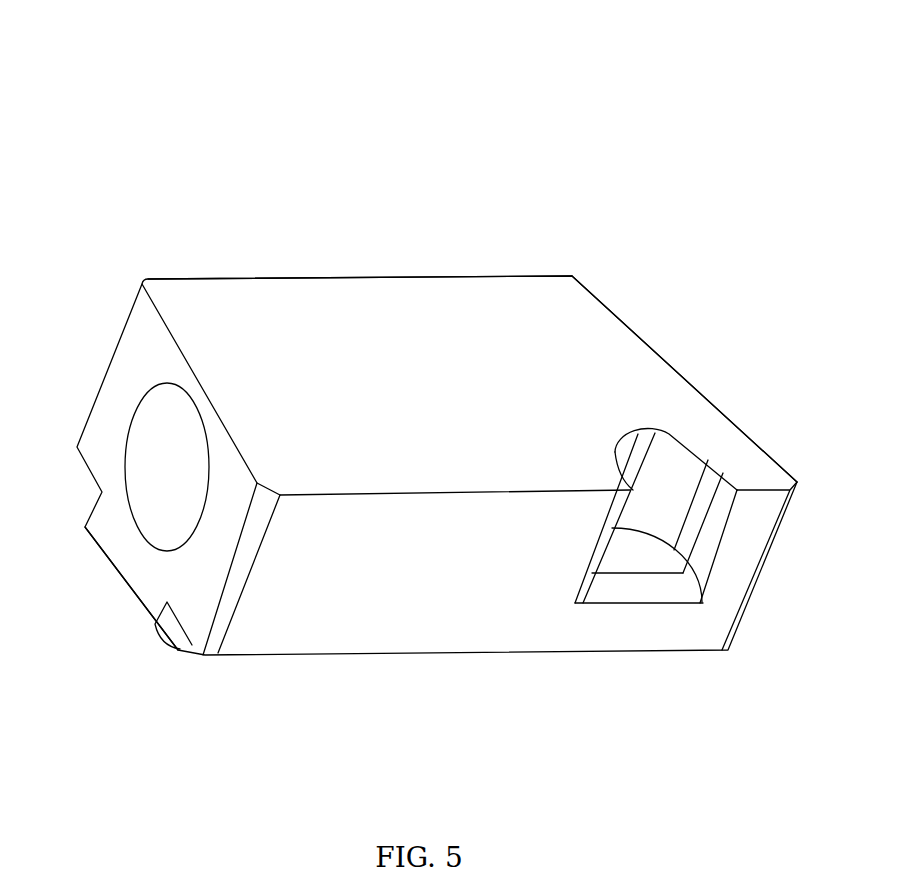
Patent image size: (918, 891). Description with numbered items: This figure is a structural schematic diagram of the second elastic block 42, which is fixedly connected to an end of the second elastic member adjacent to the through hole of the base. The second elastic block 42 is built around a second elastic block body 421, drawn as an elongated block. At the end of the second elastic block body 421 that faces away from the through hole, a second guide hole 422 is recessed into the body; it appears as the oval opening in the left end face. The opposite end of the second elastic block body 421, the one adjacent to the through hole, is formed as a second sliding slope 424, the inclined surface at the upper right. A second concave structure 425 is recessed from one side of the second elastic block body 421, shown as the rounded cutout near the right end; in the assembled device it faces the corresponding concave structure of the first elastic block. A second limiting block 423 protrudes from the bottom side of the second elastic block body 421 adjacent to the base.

The second elastic block 42 is at (410, 37).
The second elastic block body 421 is at (372, 298).
The second guide hole 422 is at (157, 420).
The second limiting block 423 is at (132, 587).
The second sliding slope 424 is at (662, 350).
The second concave structure 425 is at (673, 492).